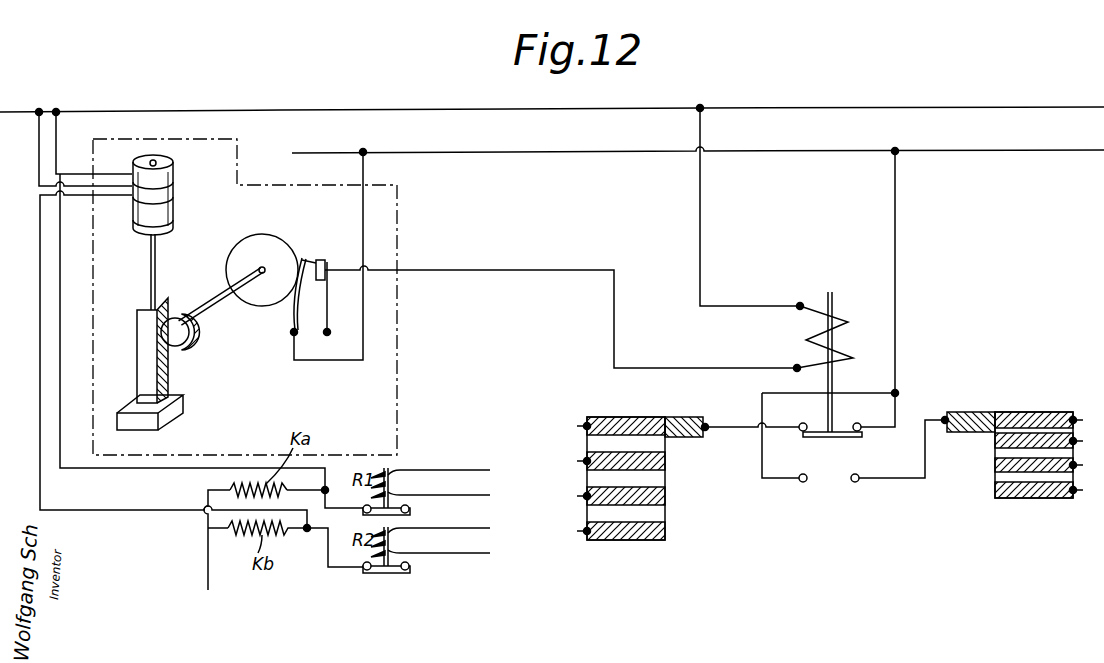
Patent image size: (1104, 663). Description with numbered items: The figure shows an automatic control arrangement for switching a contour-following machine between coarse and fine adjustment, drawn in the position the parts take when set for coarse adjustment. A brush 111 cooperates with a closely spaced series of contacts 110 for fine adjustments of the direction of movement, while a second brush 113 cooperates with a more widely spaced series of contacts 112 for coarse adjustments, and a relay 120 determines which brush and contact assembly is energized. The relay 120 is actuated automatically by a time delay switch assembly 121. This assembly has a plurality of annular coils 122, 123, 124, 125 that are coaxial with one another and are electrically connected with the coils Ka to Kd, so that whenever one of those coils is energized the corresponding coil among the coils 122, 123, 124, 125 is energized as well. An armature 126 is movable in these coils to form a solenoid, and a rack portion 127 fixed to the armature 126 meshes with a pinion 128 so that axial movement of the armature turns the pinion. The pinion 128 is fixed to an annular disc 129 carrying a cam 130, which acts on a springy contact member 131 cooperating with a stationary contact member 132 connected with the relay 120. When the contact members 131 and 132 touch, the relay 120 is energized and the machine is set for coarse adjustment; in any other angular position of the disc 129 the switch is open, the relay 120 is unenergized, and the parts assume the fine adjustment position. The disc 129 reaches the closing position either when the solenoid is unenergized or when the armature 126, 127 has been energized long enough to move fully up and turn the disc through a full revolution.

The series of contacts 110 is at (1034, 411).
The brush 111 is at (969, 411).
The series of contacts 112 is at (621, 416).
The brush 113 is at (690, 416).
The relay 120 is at (830, 296).
The time delay switch assembly 121 is at (188, 414).
The coil 122 is at (172, 160).
The coil 123 is at (174, 200).
The coil 124 is at (174, 180).
The coil 125 is at (174, 222).
The armature 126 is at (151, 263).
The rack portion 127 is at (169, 368).
The pinion 128 is at (182, 318).
The annular disc 129 is at (266, 298).
The cam 130 is at (304, 258).
The springy contact member 131 is at (329, 313).
The stationary contact member 132 is at (330, 263).